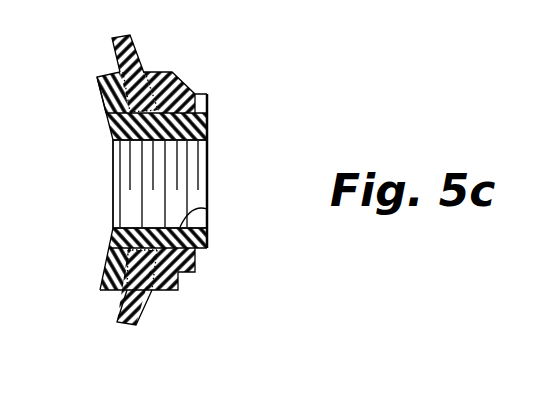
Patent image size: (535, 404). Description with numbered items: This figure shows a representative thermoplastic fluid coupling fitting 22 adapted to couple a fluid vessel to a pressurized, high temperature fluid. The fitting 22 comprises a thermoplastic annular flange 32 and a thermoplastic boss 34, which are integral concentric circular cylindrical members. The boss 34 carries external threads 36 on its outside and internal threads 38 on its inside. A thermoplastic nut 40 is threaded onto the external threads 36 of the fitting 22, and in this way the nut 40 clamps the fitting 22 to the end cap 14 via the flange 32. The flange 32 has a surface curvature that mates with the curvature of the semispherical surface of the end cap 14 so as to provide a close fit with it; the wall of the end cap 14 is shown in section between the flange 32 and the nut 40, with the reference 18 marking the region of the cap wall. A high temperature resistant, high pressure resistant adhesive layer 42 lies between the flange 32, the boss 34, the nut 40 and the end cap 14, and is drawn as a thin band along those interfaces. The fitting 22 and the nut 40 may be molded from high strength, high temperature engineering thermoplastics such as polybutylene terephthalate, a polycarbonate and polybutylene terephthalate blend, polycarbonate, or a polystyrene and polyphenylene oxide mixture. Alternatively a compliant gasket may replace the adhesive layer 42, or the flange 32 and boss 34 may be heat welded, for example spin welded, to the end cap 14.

The end cap 14 is at (142, 66).
The lens element edge 18 is at (122, 150).
The fitting 22 is at (225, 140).
The annular flange 32 is at (105, 108).
The boss 34 is at (208, 171).
The external threads 36 is at (208, 112).
The internal threads 38 is at (207, 209).
The nut 40 is at (165, 73).
The adhesive layer 42 is at (112, 72).